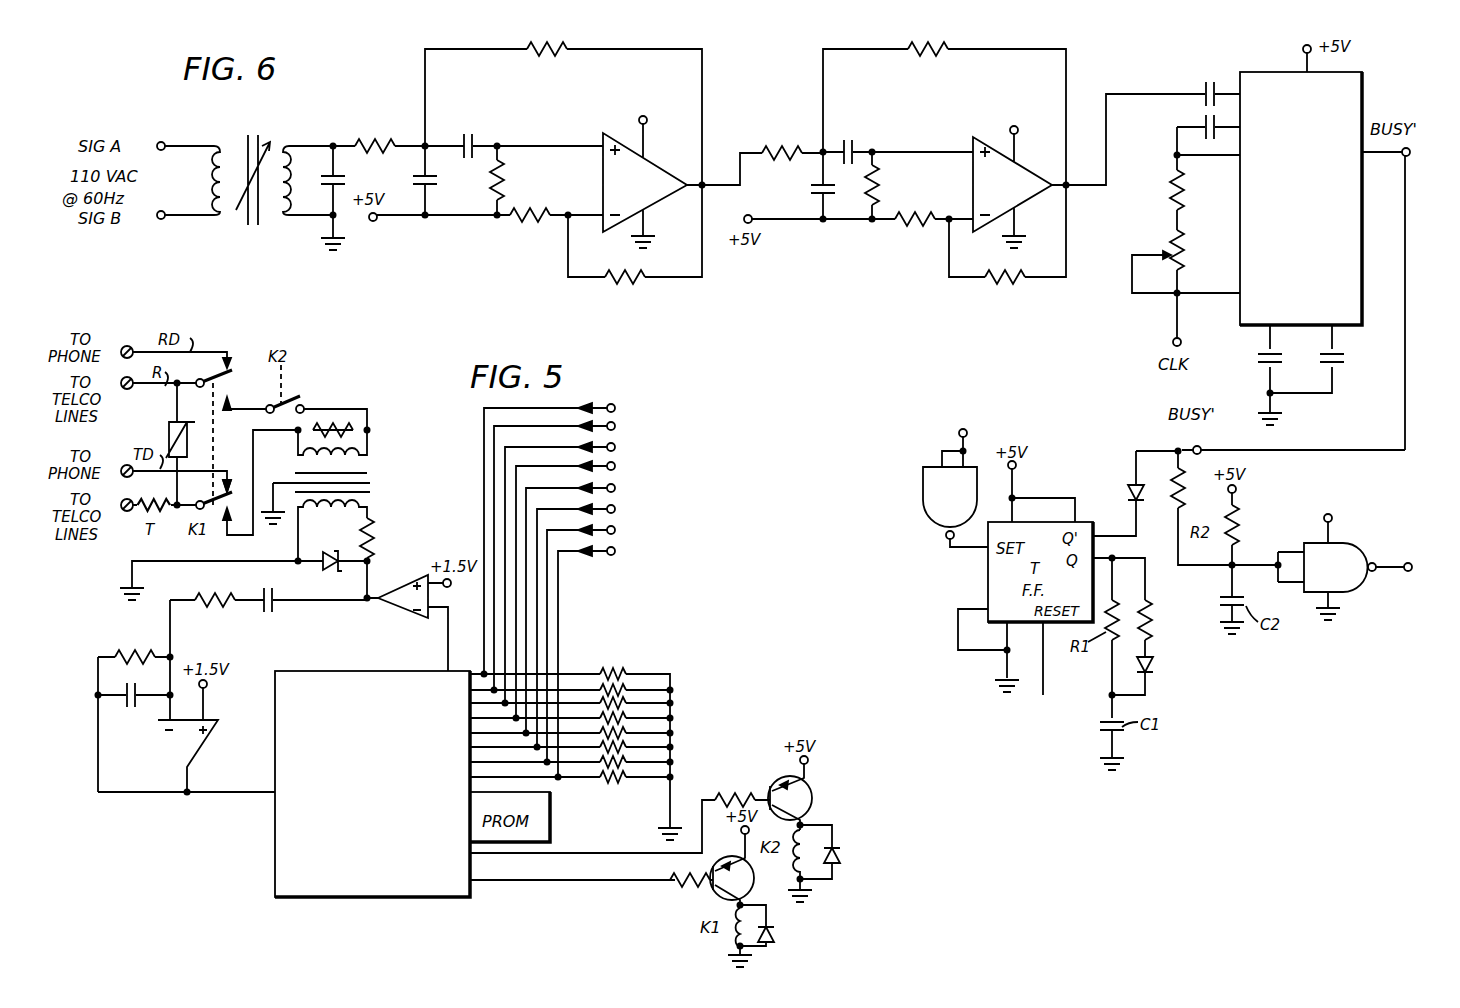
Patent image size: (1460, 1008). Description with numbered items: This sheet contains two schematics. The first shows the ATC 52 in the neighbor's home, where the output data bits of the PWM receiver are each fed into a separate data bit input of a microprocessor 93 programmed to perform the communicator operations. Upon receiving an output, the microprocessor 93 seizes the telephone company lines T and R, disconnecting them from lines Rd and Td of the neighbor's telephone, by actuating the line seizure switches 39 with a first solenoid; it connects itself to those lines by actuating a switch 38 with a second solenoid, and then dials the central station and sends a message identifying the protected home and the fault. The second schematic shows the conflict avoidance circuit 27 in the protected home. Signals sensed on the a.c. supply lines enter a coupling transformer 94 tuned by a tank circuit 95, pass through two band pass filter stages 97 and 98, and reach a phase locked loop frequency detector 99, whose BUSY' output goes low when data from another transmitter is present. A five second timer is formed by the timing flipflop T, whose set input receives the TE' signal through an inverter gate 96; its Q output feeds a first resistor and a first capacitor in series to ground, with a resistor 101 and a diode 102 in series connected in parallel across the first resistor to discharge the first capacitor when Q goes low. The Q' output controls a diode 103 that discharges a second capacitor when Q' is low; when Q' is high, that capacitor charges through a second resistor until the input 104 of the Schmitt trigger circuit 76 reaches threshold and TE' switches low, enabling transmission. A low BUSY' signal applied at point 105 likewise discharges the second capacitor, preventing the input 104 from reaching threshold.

In FIG. 6, the conflict avoidance circuit 27 is at (878, 88).
In FIG. 6, the coupling transformer 94 is at (253, 150).
In FIG. 6, the tank circuit 95 is at (303, 168).
In FIG. 6, the band pass filter stage 97 is at (603, 142).
In FIG. 6, the band pass filter stage 98 is at (973, 147).
In FIG. 6, the phase locked loop frequency detector 99 is at (1302, 278).
In FIG. 5, the switch 38 is at (298, 400).
In FIG. 5, the line seizure switches 39 is at (240, 360).
In FIG. 5, the ATC 52 is at (692, 590).
In FIG. 5, the Schmitt trigger circuit 76 is at (1345, 554).
In FIG. 5, the microprocessor 93 is at (377, 836).
In FIG. 5, the inverter gate 96 is at (926, 500).
In FIG. 5, the resistor 101 is at (1150, 617).
In FIG. 5, the diode 102 is at (1156, 662).
In FIG. 5, the diode 103 is at (1128, 492).
In FIG. 5, the input 104 is at (1236, 562).
In FIG. 5, the point 105 is at (1175, 449).